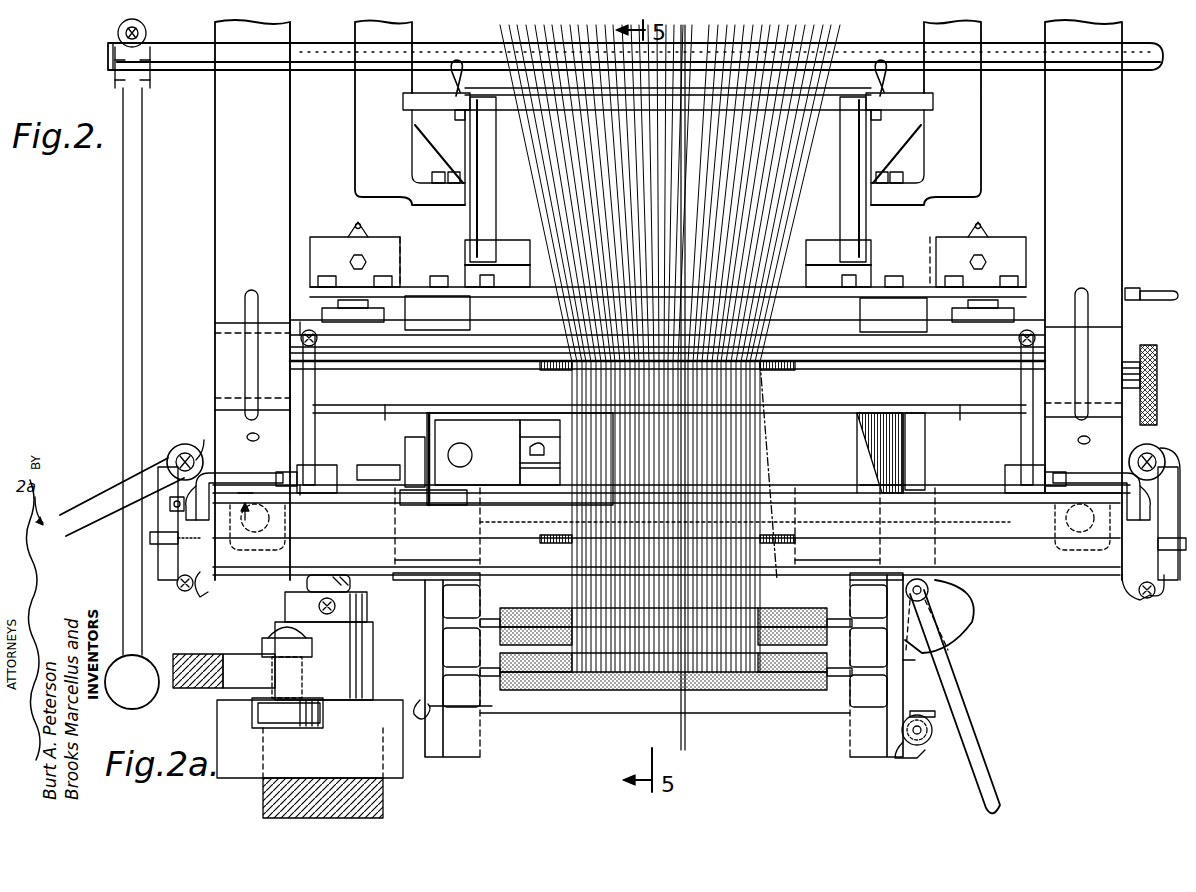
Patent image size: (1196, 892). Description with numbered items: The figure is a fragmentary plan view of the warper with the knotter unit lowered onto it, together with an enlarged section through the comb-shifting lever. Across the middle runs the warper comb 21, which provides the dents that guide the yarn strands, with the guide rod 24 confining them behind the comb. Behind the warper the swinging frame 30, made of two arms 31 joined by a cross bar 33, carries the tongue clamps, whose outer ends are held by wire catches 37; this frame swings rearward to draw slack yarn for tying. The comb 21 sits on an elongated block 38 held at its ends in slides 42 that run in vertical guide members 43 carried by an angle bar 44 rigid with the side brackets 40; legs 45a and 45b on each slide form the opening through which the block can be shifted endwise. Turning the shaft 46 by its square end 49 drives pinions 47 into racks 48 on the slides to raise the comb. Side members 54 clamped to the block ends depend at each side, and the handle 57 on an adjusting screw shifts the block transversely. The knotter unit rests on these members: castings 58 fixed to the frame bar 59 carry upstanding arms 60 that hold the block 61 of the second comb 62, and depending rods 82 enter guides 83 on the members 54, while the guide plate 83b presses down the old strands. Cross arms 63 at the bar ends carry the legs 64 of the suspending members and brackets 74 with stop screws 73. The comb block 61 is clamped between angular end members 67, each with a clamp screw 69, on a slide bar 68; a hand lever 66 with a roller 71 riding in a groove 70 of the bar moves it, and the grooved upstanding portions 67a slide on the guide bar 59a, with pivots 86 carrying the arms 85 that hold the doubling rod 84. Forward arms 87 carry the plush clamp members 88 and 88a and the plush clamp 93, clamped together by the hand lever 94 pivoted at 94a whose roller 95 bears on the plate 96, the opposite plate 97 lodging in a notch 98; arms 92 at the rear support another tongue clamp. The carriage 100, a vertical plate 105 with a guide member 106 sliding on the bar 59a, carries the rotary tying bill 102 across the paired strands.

In FIG. 2, the warper comb 21 is at (553, 377).
In FIG. 2, the guide rod 24 is at (474, 315).
In FIG. 2, the swinging frame 30 is at (450, 84).
In FIG. 2, the arms 31 is at (481, 156).
In FIG. 2, the cross bar 33 is at (404, 108).
In FIG. 2, the wire catches 37 is at (452, 96).
In FIG. 2, the comb block 38 is at (841, 408).
In FIG. 2, the side brackets 40 is at (405, 450).
In FIG. 2, the slides 42 is at (322, 311).
In FIG. 2, the vertical guide members 43 is at (310, 287).
In FIG. 2, the angle bar 44 is at (904, 244).
In FIG. 2, the leg 45a is at (350, 330).
In FIG. 2, the leg 45b is at (385, 406).
In FIG. 2, the shaft 46 is at (1136, 284).
In FIG. 2, the pinions 47 is at (349, 282).
In FIG. 2, the racks 48 is at (938, 321).
In FIG. 2, the square projecting end 49 is at (1174, 292).
In FIG. 2, the side members 54 is at (214, 346).
In FIG. 2, the handle 57 is at (1152, 364).
In FIG. 2, the castings 58 is at (424, 604).
In FIG. 2, the frame bar 59 is at (828, 508).
In FIG. 2, the transverse guide bar 59a is at (860, 502).
In FIG. 2, the upstanding arms 60 is at (438, 576).
In FIG. 2, the supporting block 61 is at (288, 570).
In FIG. 2, the knotter comb 62 is at (560, 538).
In FIG. 2, the cross arms 63 is at (202, 594).
In FIG. 2, the legs 64 is at (172, 448).
In FIG. 2, the hand lever 66 is at (93, 498).
In FIG. 2A, the hand lever 66 is at (195, 652).
In FIG. 2, the angular end members 67 is at (205, 452).
In FIG. 2, the upstanding portions 67a is at (280, 460).
In FIG. 2, the slide bar 68 is at (204, 440).
In FIG. 2A, the slide bar 68 is at (396, 770).
In FIG. 2, the clamp screw 69 is at (156, 536).
In FIG. 2A, the groove 70 is at (258, 708).
In FIG. 2, the roller 71 is at (173, 508).
In FIG. 2A, the roller 71 is at (262, 728).
In FIG. 2, the adjustable stop screws 73 is at (206, 574).
In FIG. 2, the brackets 74 is at (150, 560).
In FIG. 2, the depending rods 82 is at (276, 521).
In FIG. 2, the guides 83 is at (246, 544).
In FIG. 2, the guide plate 83b is at (893, 470).
In FIG. 2, the rod 84 is at (892, 362).
In FIG. 2, the arms 85 is at (316, 440).
In FIG. 2, the pivot 86 is at (256, 438).
In FIG. 2, the arms 87 is at (462, 753).
In FIG. 2, the plush clamp member 88 is at (828, 578).
In FIG. 2, the plush clamp member 88a is at (880, 661).
In FIG. 2, the arms 92 is at (289, 166).
In FIG. 2, the plush clamp 93 is at (763, 710).
In FIG. 2, the hand lever 94 is at (980, 770).
In FIG. 2, the pivot 94a is at (928, 591).
In FIG. 2, the roller 95 is at (938, 756).
In FIG. 2, the plate 96 is at (928, 706).
In FIG. 2, the plate 97 is at (462, 696).
In FIG. 2, the notch 98 is at (420, 708).
In FIG. 2, the carriage 100 is at (423, 434).
In FIG. 2, the rotary tying bill 102 is at (530, 456).
In FIG. 2, the carriage plate 105 is at (514, 458).
In FIG. 2, the guide member 106 is at (467, 498).